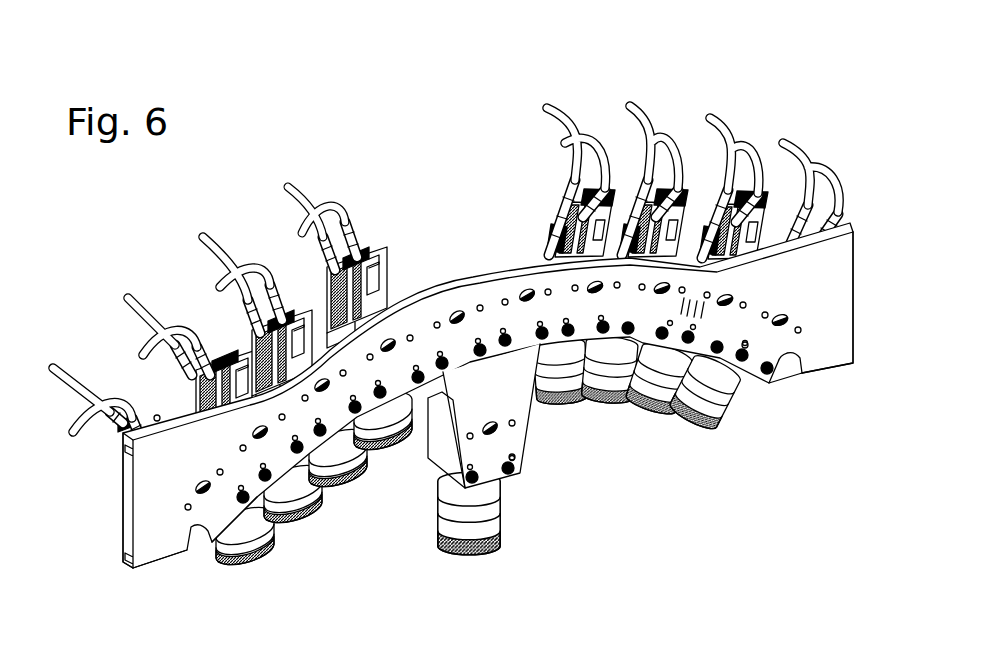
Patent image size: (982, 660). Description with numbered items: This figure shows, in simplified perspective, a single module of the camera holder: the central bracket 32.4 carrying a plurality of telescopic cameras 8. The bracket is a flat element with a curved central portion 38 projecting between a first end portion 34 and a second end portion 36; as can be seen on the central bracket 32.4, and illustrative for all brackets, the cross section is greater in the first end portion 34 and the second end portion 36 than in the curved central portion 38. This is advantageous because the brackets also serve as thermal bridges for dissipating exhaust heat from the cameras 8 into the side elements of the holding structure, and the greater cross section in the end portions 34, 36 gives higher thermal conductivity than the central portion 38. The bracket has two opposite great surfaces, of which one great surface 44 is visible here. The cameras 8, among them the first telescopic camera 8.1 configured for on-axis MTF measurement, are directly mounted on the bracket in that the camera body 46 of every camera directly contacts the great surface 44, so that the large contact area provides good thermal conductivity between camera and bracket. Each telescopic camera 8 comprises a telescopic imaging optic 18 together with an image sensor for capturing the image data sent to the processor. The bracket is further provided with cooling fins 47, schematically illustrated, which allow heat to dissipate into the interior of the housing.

The central bracket 32.4 is at (755, 100).
The telescopic camera 8 is at (380, 268).
The first telescopic camera 8.1 is at (508, 442).
The telescopic imaging optic 18 is at (485, 508).
The first end portion 34 is at (163, 543).
The second end portion 36 is at (846, 357).
The curved central portion 38 is at (495, 298).
The great surface 44 is at (150, 487).
The camera body 46 is at (472, 453).
The cooling fins 47 is at (713, 315).